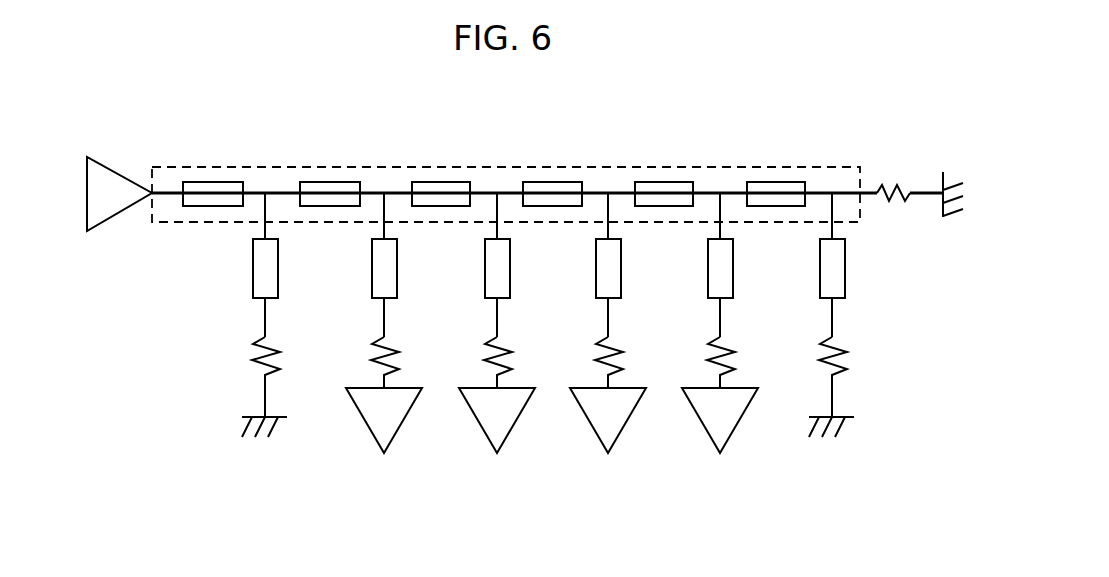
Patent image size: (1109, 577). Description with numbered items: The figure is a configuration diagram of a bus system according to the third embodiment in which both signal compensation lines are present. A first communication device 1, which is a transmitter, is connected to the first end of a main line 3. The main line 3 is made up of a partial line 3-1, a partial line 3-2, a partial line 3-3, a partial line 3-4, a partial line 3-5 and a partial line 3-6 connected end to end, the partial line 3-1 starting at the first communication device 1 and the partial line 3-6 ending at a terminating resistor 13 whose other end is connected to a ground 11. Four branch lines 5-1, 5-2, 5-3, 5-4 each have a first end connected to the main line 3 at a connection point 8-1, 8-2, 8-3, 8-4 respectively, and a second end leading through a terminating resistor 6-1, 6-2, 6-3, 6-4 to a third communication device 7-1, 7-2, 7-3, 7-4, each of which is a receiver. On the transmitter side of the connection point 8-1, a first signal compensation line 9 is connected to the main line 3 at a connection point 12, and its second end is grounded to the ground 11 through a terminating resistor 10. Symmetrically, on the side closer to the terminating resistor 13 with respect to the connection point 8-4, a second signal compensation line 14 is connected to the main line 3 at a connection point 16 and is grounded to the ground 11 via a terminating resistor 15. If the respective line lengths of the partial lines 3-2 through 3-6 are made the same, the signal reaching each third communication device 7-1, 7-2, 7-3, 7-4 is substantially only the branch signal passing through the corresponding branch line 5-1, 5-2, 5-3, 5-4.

The first communication device 1 is at (115, 172).
The main line 3 is at (171, 167).
The partial line 3-1 is at (218, 182).
The partial line 3-2 is at (329, 182).
The partial line 3-3 is at (440, 182).
The partial line 3-4 is at (554, 182).
The partial line 3-5 is at (667, 182).
The partial line 3-6 is at (773, 182).
The connection point 12 is at (266, 188).
The connection point 8-1 is at (384, 188).
The connection point 8-2 is at (497, 188).
The connection point 8-3 is at (608, 188).
The connection point 8-4 is at (720, 188).
The connection point 16 is at (832, 188).
The signal compensation line 9 is at (262, 238).
The branch line 5-1 is at (372, 283).
The branch line 5-2 is at (485, 283).
The branch line 5-3 is at (596, 283).
The branch line 5-4 is at (708, 283).
The signal compensation line 14 is at (845, 261).
The terminating resistor 10 is at (260, 340).
The terminating resistor 6-1 is at (382, 343).
The terminating resistor 6-2 is at (495, 343).
The terminating resistor 6-3 is at (606, 343).
The terminating resistor 6-4 is at (718, 343).
The terminating resistor 15 is at (838, 369).
The third communication device 7-1 is at (368, 425).
The third communication device 7-2 is at (481, 425).
The third communication device 7-3 is at (592, 425).
The third communication device 7-4 is at (704, 425).
The terminating resistor 13 is at (899, 182).
The ground 11 is at (246, 427).